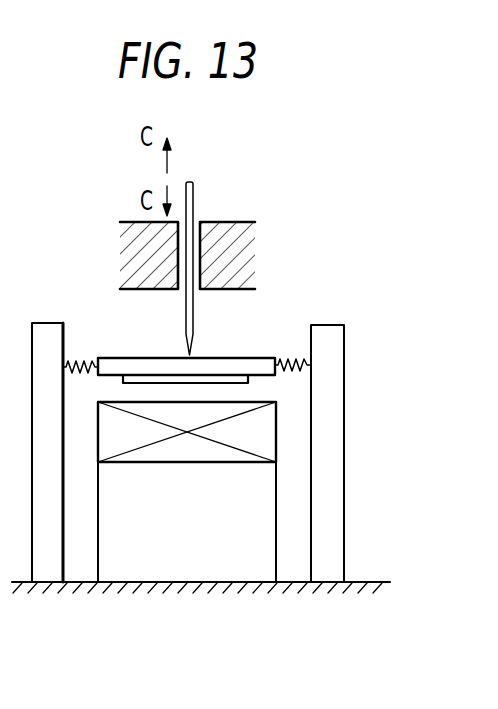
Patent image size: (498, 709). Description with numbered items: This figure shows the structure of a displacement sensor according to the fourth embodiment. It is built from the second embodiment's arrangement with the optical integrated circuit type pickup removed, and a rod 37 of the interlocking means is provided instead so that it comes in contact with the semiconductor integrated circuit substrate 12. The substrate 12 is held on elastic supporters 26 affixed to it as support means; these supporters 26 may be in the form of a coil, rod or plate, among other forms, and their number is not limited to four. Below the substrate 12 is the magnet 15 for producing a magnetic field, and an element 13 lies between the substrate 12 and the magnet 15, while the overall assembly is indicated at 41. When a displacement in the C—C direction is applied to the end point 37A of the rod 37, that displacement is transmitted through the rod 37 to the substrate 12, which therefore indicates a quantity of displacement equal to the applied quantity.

The end point 37A is at (196, 180).
The rod 37 is at (196, 304).
The semiconductor integrated circuit substrate 12 is at (247, 357).
The workpiece bar 13 is at (232, 384).
The elastic supporters 26 is at (82, 362).
The positioning assembly 41 is at (326, 286).
The magnet 15 is at (180, 463).